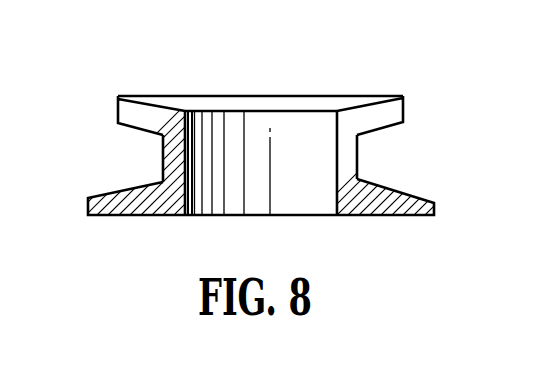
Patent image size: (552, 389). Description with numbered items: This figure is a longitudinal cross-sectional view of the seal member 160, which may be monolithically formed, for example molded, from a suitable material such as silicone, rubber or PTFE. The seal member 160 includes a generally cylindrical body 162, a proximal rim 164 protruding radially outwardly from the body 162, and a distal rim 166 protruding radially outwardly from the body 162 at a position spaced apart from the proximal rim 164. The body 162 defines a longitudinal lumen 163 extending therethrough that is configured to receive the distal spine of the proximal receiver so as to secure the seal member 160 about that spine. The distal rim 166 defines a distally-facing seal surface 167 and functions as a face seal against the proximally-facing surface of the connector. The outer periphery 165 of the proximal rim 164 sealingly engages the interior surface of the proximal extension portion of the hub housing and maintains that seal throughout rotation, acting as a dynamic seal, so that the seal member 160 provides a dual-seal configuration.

The seal member 160 is at (425, 229).
The body 162 is at (359, 158).
The longitudinal lumen 163 is at (300, 137).
The proximal rim 164 is at (118, 207).
The outer periphery 165 is at (440, 209).
The distal rim 166 is at (128, 111).
The distally-facing seal surface 167 is at (144, 93).